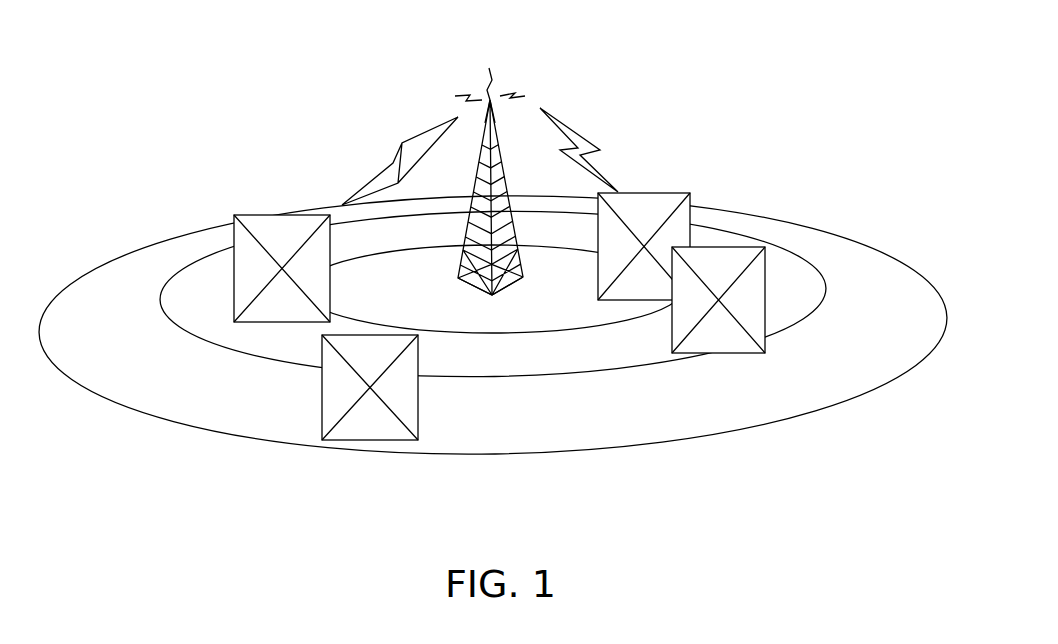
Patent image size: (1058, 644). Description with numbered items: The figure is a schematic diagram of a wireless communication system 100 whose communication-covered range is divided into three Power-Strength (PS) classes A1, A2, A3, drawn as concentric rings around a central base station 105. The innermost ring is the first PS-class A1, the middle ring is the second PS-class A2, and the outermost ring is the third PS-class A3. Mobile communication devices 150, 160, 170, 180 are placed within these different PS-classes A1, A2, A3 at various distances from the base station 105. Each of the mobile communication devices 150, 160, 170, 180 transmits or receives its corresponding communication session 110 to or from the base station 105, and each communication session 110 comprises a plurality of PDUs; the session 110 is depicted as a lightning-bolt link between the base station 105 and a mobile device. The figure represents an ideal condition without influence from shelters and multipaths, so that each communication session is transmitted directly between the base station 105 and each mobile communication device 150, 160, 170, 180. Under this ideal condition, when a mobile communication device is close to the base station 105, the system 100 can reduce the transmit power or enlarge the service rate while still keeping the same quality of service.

The wireless communication system 100 is at (262, 165).
The base station 105 is at (502, 152).
The communication session 110 is at (600, 194).
The mobile communication device 150 is at (693, 208).
The mobile communication device 160 is at (766, 249).
The mobile communication device 170 is at (340, 432).
The mobile communication device 180 is at (260, 322).
The Power-Strength class A1 is at (515, 316).
The Power-Strength class A2 is at (613, 339).
The Power-Strength class A3 is at (727, 392).